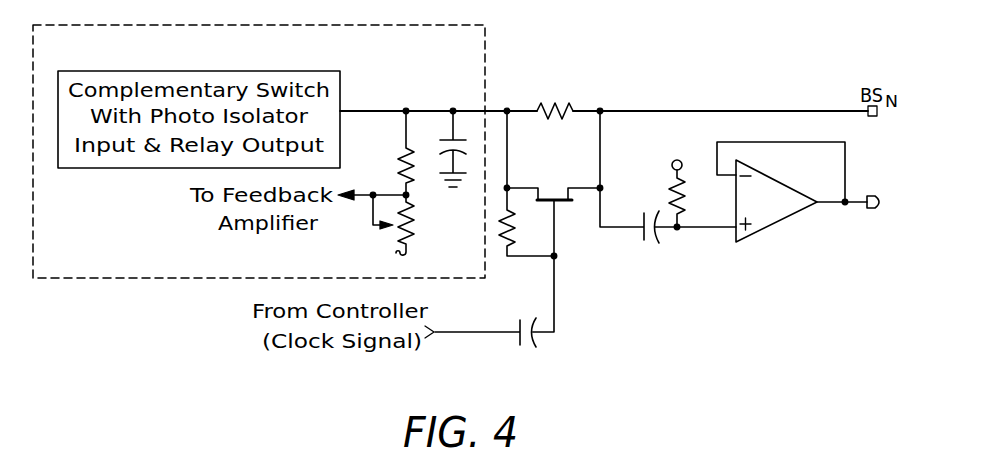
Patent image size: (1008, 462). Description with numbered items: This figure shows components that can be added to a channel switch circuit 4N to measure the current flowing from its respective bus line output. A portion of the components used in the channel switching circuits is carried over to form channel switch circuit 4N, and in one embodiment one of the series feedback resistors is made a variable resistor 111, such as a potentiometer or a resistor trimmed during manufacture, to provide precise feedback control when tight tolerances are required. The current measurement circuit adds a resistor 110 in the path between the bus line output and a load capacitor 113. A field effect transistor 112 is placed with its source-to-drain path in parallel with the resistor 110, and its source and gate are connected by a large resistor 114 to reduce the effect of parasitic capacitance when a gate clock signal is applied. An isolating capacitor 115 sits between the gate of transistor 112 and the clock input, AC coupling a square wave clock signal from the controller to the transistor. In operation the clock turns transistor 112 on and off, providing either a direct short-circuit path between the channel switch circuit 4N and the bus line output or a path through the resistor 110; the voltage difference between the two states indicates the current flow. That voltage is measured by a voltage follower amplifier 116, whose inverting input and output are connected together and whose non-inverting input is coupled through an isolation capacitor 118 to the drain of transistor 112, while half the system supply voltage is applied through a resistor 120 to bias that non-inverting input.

The channel switch circuit 4N is at (486, 49).
The resistor 110 is at (546, 106).
The variable resistor 111 is at (373, 226).
The field effect transistor 112 is at (576, 188).
The load capacitor 113 is at (446, 140).
The large resistor 114 is at (501, 230).
The isolating capacitor 115 is at (519, 340).
The voltage follower amplifier 116 is at (764, 228).
The isolation capacitor 118 is at (644, 236).
The resistor 120 is at (667, 203).